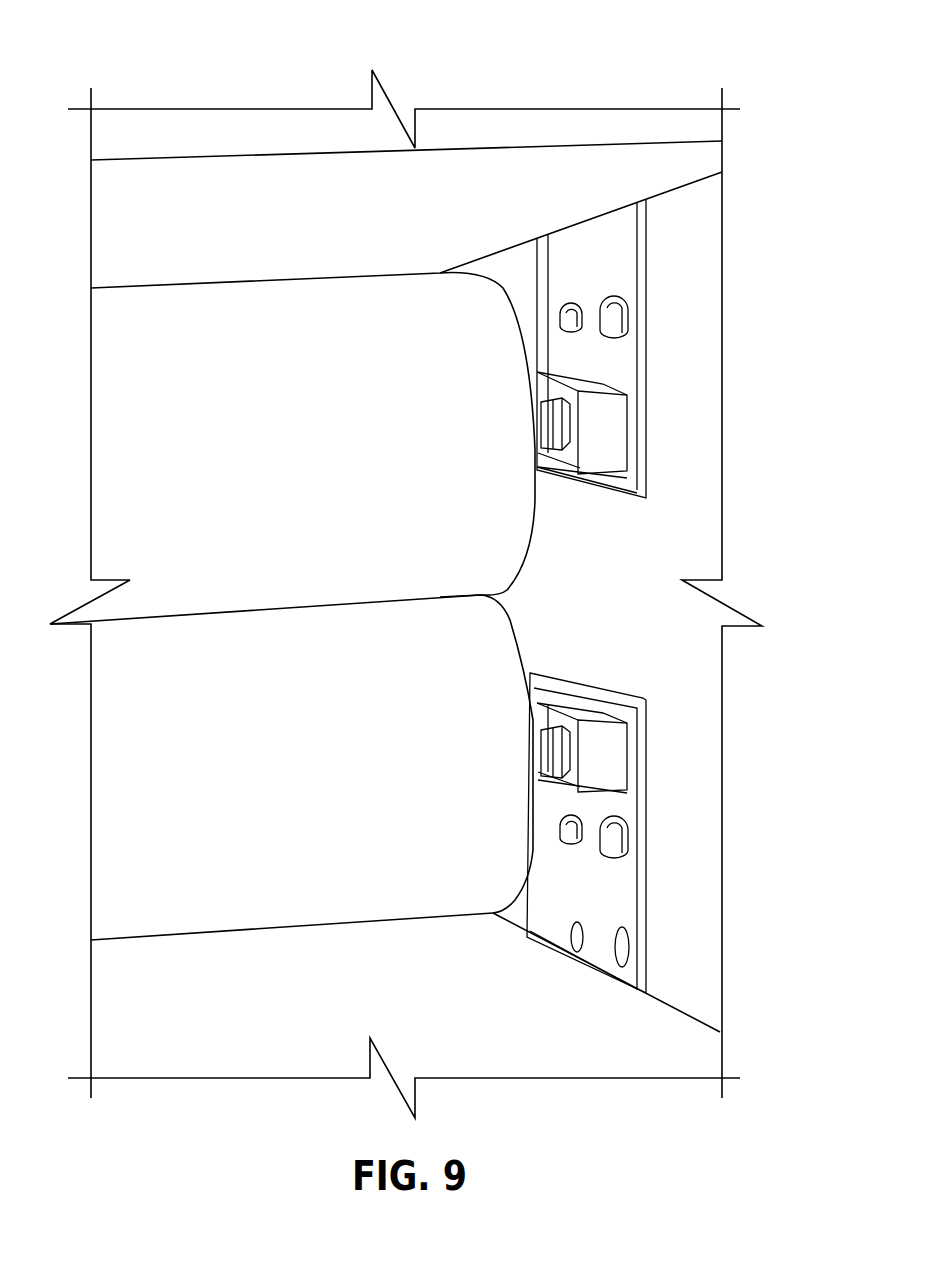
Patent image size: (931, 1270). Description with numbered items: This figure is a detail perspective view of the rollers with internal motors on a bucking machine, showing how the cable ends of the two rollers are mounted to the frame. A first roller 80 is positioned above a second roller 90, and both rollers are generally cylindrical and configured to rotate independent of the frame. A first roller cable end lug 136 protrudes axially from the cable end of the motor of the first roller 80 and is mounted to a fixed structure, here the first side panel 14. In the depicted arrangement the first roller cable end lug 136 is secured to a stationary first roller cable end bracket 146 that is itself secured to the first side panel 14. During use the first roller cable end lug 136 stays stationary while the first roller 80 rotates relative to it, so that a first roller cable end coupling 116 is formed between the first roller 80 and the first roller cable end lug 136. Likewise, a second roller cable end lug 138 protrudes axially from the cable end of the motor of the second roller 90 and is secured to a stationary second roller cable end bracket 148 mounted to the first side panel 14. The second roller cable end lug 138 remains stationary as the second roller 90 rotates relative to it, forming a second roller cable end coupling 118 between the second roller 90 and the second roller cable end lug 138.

The first side panel 14 is at (694, 302).
The first roller 80 is at (302, 425).
The second roller 90 is at (302, 775).
The first roller cable end coupling 116 is at (546, 352).
The second roller cable end coupling 118 is at (563, 683).
The first roller cable end bracket 146 is at (619, 420).
The second roller cable end bracket 148 is at (619, 755).
The first roller cable end lug 136 is at (560, 445).
The second roller cable end lug 138 is at (558, 765).